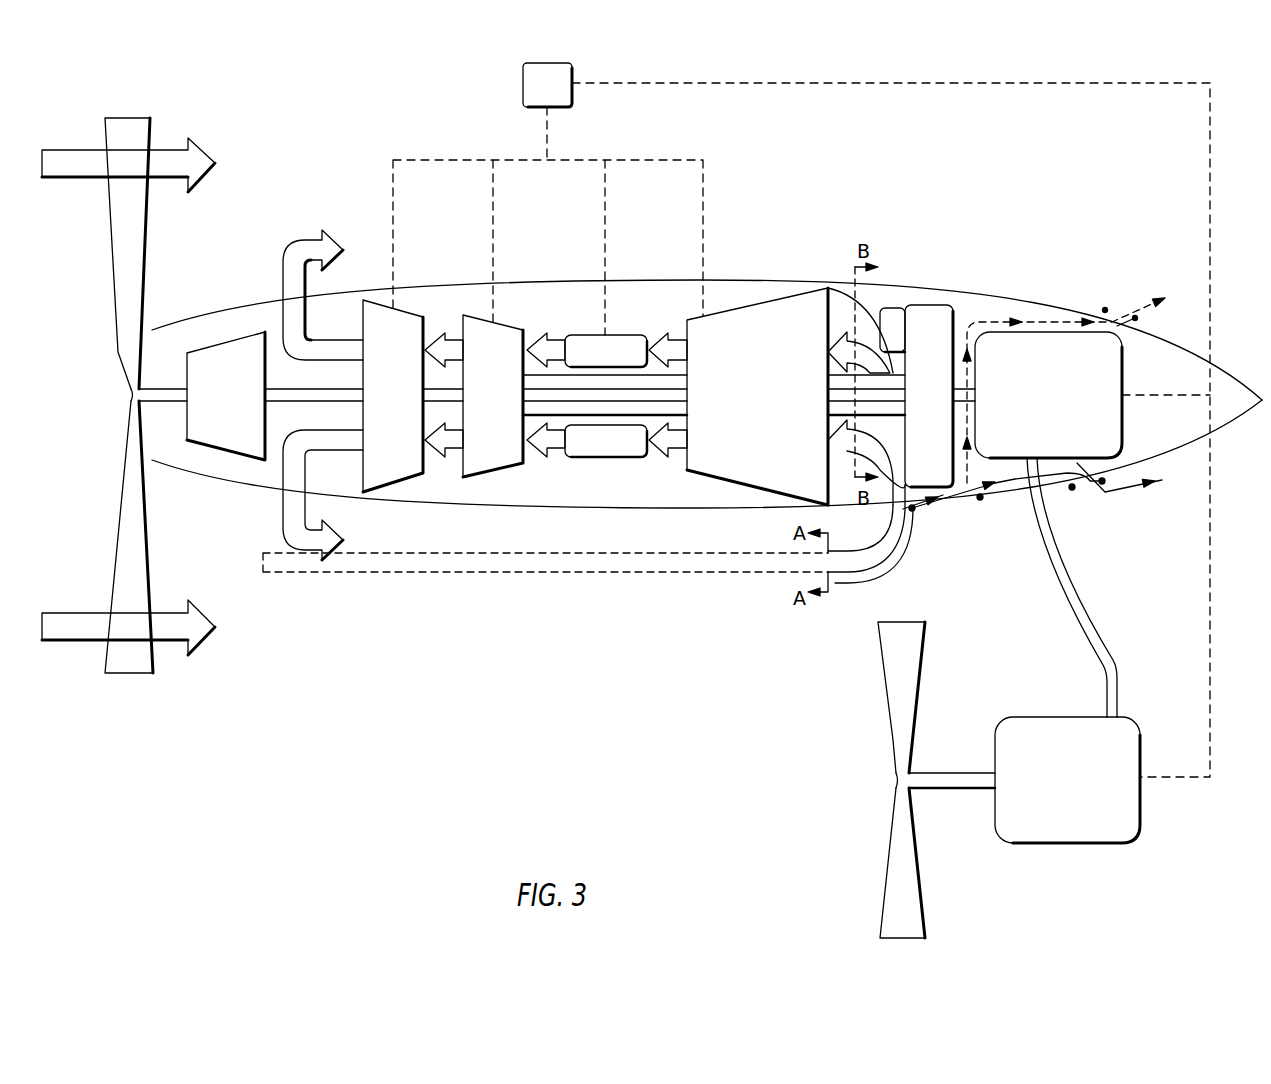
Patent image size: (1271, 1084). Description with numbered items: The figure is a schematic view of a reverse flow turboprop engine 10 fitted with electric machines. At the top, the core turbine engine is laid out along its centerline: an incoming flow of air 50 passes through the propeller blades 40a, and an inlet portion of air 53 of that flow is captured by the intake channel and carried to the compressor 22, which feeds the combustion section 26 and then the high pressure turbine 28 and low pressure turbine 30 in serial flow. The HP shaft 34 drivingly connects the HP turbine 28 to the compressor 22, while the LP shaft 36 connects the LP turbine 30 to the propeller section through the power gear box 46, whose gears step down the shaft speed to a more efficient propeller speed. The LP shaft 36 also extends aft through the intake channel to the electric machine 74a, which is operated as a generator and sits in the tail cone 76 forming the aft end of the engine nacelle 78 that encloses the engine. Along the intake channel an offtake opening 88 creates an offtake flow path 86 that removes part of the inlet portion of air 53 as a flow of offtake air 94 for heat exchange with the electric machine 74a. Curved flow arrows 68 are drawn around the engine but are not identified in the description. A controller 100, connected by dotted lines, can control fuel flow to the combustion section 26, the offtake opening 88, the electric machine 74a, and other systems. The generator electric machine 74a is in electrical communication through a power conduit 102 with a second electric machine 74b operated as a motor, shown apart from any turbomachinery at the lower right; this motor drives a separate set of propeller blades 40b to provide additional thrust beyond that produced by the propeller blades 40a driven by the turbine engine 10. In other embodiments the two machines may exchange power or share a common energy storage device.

The turboprop engine 10 is at (345, 105).
The compressor 22 is at (757, 308).
The combustion section 26 is at (598, 333).
The high pressure turbine 28 is at (513, 327).
The low pressure turbine 30 is at (383, 312).
The HP shaft 34 is at (620, 412).
The LP shaft 36 is at (280, 403).
The propeller blades 40a is at (123, 277).
The propeller blades 40b is at (893, 718).
The power gear box 46 is at (223, 337).
The flow of air 50 is at (80, 150).
The inlet portion of air 53 is at (850, 330).
The bypass airflow 68 is at (287, 257).
The electric machine 74a is at (1065, 332).
The electric machine 74b is at (1050, 715).
The tail cone 76 is at (1228, 352).
The engine nacelle 78 is at (463, 280).
The offtake flow path 86 is at (979, 500).
The offtake opening 88 is at (928, 545).
The flow of offtake air 94 is at (1013, 481).
The controller 100 is at (523, 83).
The power conduit 102 is at (1087, 608).